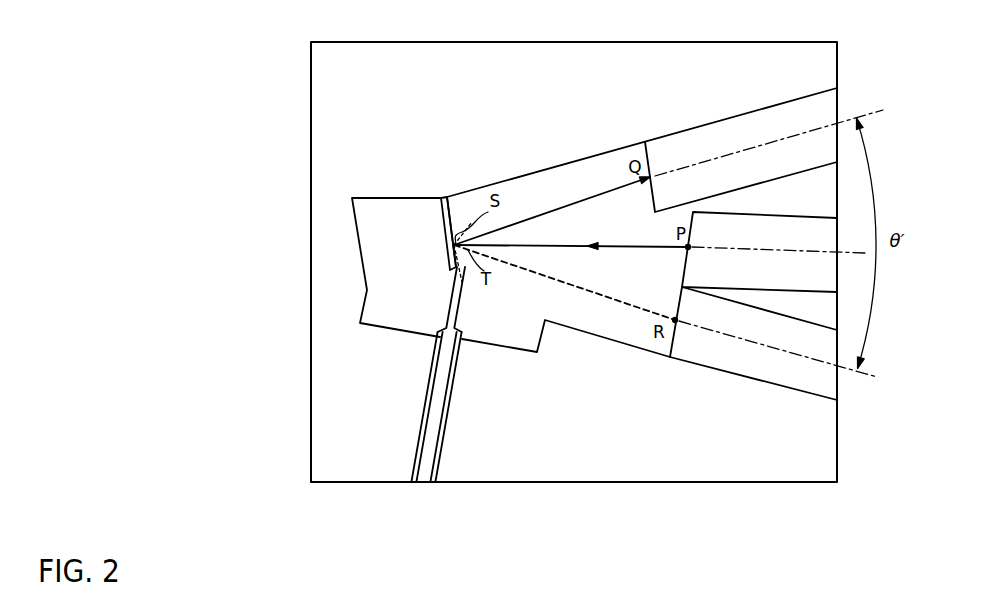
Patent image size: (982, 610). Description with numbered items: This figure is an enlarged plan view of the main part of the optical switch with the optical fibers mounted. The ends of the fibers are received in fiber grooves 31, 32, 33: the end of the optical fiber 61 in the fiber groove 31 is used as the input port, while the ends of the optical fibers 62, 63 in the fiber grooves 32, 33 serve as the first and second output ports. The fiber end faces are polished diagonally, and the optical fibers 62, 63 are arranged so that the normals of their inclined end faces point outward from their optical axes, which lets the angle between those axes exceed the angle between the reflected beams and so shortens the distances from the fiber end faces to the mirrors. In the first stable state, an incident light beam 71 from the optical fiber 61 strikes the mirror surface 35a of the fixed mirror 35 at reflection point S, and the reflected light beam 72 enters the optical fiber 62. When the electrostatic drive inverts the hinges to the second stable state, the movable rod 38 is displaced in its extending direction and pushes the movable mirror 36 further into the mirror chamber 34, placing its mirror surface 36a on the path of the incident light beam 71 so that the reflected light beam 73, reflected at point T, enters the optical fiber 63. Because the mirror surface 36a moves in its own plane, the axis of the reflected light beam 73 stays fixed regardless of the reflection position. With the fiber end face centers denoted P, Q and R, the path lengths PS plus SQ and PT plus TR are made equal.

The fiber groove 31 is at (778, 290).
The fiber groove 32 is at (765, 178).
The fiber groove 33 is at (762, 385).
The mirror chamber 34 is at (408, 198).
The fixed mirror 35 is at (442, 236).
The mirror surface 35a is at (447, 222).
The movable mirror 36 is at (393, 388).
The mirror surface 36a is at (463, 290).
The movable rod 38 is at (432, 433).
The optical fiber 61 is at (820, 230).
The optical fiber 62 is at (817, 102).
The optical fiber 63 is at (828, 352).
The incident light beam 71 is at (612, 246).
The reflected light beam 72 is at (588, 197).
The reflected light beam 73 is at (580, 285).